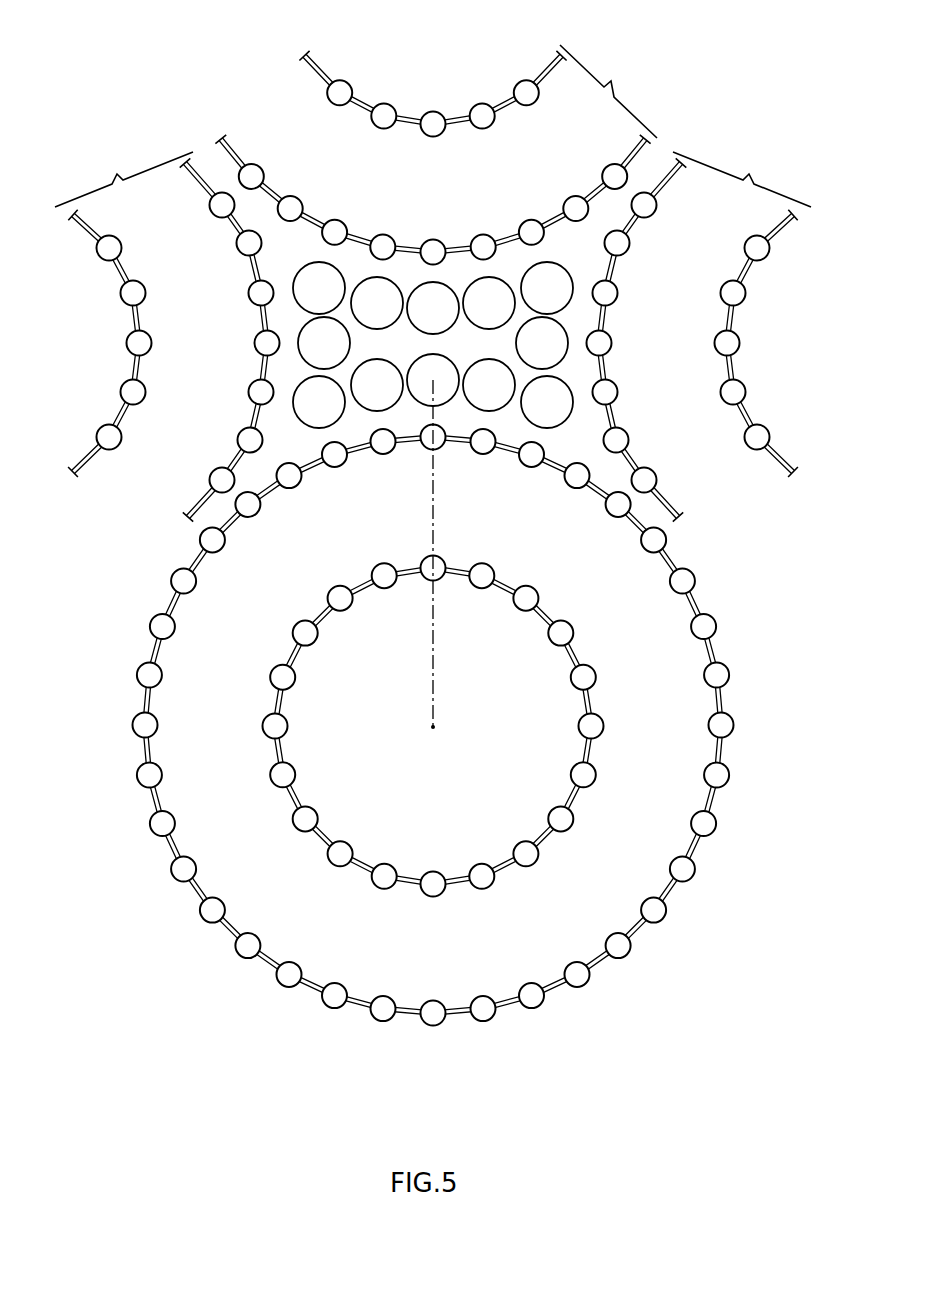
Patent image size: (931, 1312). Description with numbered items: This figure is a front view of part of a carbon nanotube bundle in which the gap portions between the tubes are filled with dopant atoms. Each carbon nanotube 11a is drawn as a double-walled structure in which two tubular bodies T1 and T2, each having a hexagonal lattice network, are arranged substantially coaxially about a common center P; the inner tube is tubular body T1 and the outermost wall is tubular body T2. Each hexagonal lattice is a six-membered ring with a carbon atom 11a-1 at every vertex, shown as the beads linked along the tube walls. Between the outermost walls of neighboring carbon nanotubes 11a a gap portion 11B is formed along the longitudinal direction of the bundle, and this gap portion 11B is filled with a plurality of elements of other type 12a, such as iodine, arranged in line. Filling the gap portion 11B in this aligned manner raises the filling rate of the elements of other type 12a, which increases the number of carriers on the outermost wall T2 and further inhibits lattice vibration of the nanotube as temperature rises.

The inner tubular body T1 is at (411, 115).
The outermost wall tubular body T2 is at (411, 243).
The carbon nanotube 11a is at (108, 164).
The carbon atom 11a-1 is at (436, 1013).
The element of other type 12a is at (493, 300).
The gap portion 11B is at (495, 347).
The center point P is at (433, 727).